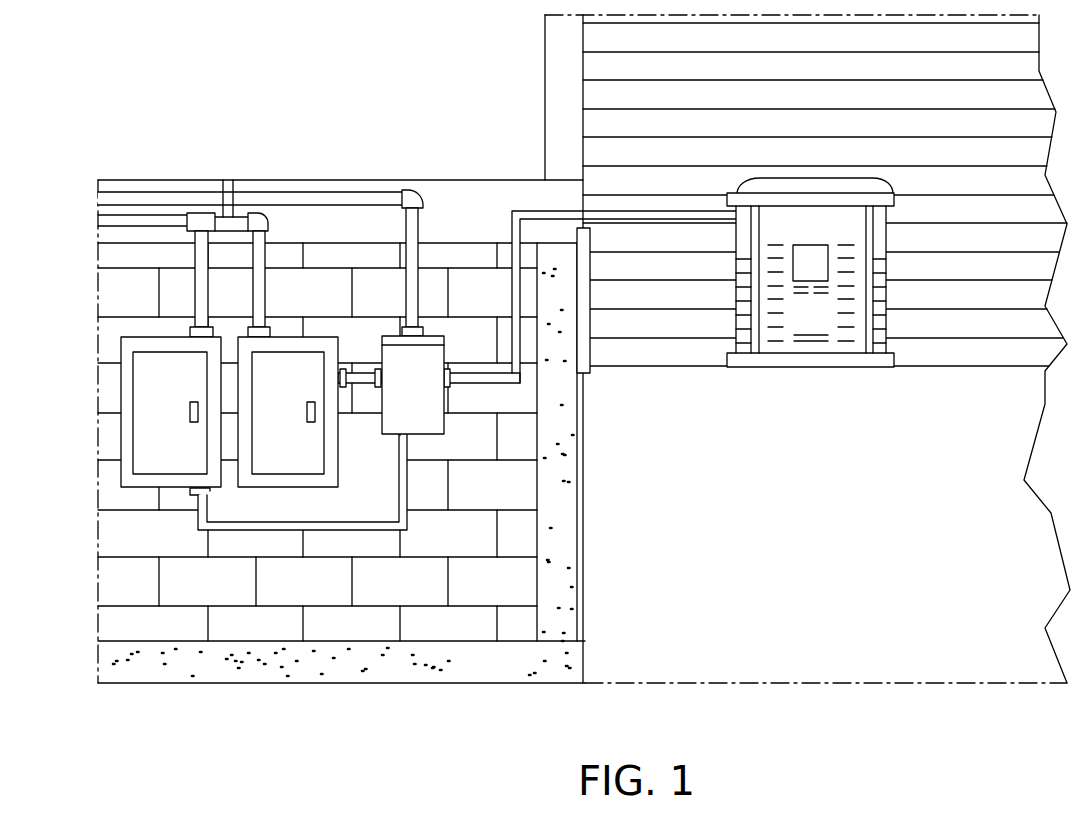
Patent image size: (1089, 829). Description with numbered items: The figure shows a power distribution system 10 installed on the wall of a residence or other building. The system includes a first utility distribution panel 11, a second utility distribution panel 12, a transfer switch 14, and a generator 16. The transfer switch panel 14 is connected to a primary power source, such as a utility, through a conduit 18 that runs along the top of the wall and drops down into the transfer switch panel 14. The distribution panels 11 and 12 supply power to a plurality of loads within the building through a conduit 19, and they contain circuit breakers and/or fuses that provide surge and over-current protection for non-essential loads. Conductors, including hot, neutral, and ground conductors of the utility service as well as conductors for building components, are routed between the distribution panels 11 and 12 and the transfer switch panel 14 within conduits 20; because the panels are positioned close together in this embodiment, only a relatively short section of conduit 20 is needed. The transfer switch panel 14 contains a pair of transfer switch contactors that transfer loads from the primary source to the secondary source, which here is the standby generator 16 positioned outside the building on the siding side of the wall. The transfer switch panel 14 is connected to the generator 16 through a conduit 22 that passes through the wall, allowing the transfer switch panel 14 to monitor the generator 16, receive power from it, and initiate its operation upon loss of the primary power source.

The power distribution system 10 is at (622, 406).
The first utility distribution panel 11 is at (146, 391).
The second utility distribution panel 12 is at (292, 360).
The transfer switch 14 is at (428, 421).
The generator 16 is at (815, 361).
The conduit 18 is at (275, 200).
The conduit 19 is at (201, 221).
The conduits 20 is at (363, 378).
The conduit 22 is at (533, 211).